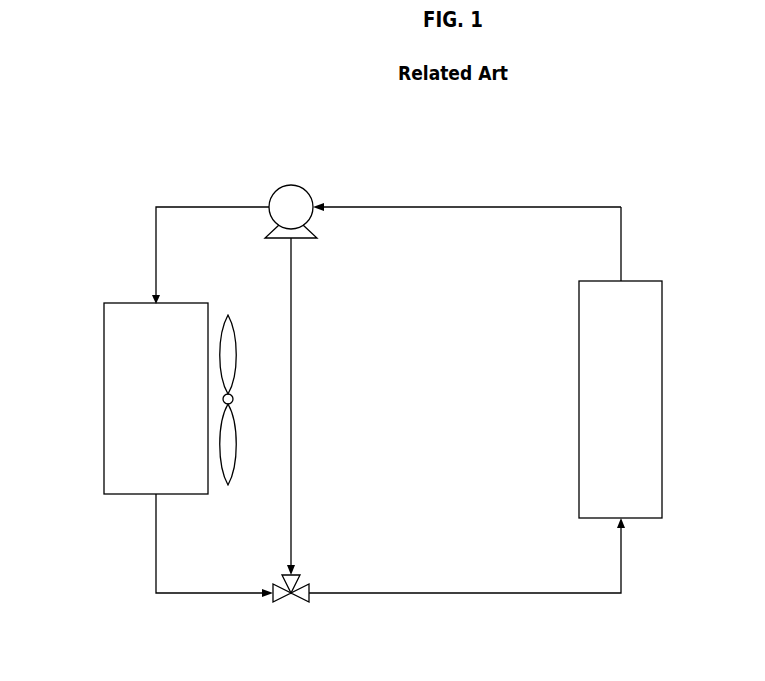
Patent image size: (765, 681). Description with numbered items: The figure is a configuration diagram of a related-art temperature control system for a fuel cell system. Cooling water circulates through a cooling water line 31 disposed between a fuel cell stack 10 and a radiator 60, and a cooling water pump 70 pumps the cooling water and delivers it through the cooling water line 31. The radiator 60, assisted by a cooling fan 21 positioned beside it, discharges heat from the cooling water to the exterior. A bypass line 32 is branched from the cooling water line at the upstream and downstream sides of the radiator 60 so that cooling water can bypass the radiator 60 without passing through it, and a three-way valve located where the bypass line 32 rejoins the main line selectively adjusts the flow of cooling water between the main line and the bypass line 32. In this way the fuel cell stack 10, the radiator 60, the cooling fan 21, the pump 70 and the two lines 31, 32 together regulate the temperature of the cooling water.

The fuel cell stack 10 is at (662, 402).
The cooling fan 21 is at (228, 485).
The cooling water line 31 is at (217, 206).
The bypass line 32 is at (292, 407).
The radiator 60 is at (104, 341).
The cooling water pump 70 is at (308, 193).